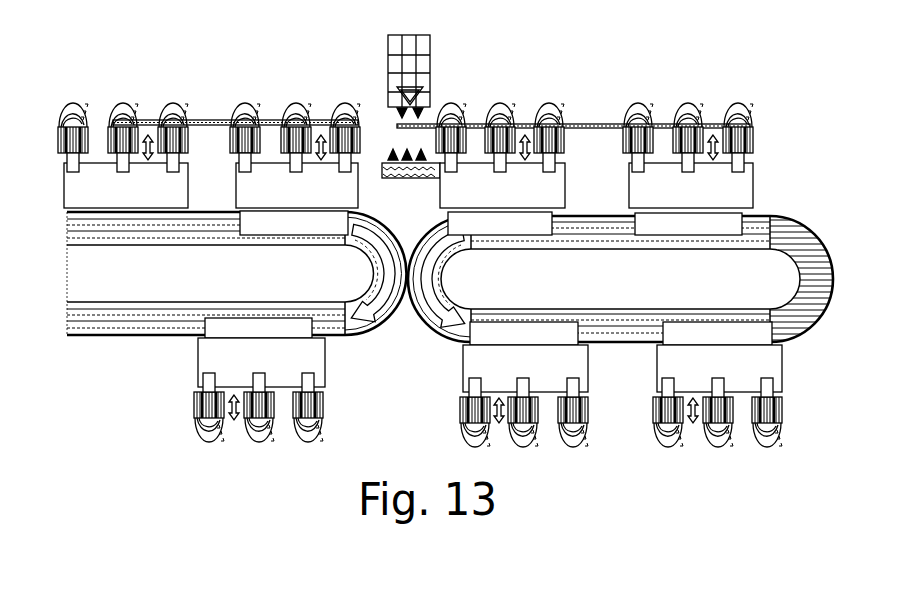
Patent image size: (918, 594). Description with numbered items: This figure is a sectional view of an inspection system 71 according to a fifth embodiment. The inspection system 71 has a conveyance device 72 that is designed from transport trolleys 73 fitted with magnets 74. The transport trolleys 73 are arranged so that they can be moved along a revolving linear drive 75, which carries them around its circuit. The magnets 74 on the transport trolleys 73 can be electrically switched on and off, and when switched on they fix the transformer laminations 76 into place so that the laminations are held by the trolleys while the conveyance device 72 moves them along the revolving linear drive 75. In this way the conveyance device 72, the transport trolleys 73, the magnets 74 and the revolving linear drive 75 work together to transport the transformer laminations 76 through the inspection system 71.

The inspection system 71 is at (660, 86).
The conveyance device 72 is at (626, 226).
The transport trolley 73 is at (477, 190).
The magnet 74 is at (512, 126).
The revolving linear drive 75 is at (764, 216).
The transformer lamination 76 is at (600, 125).